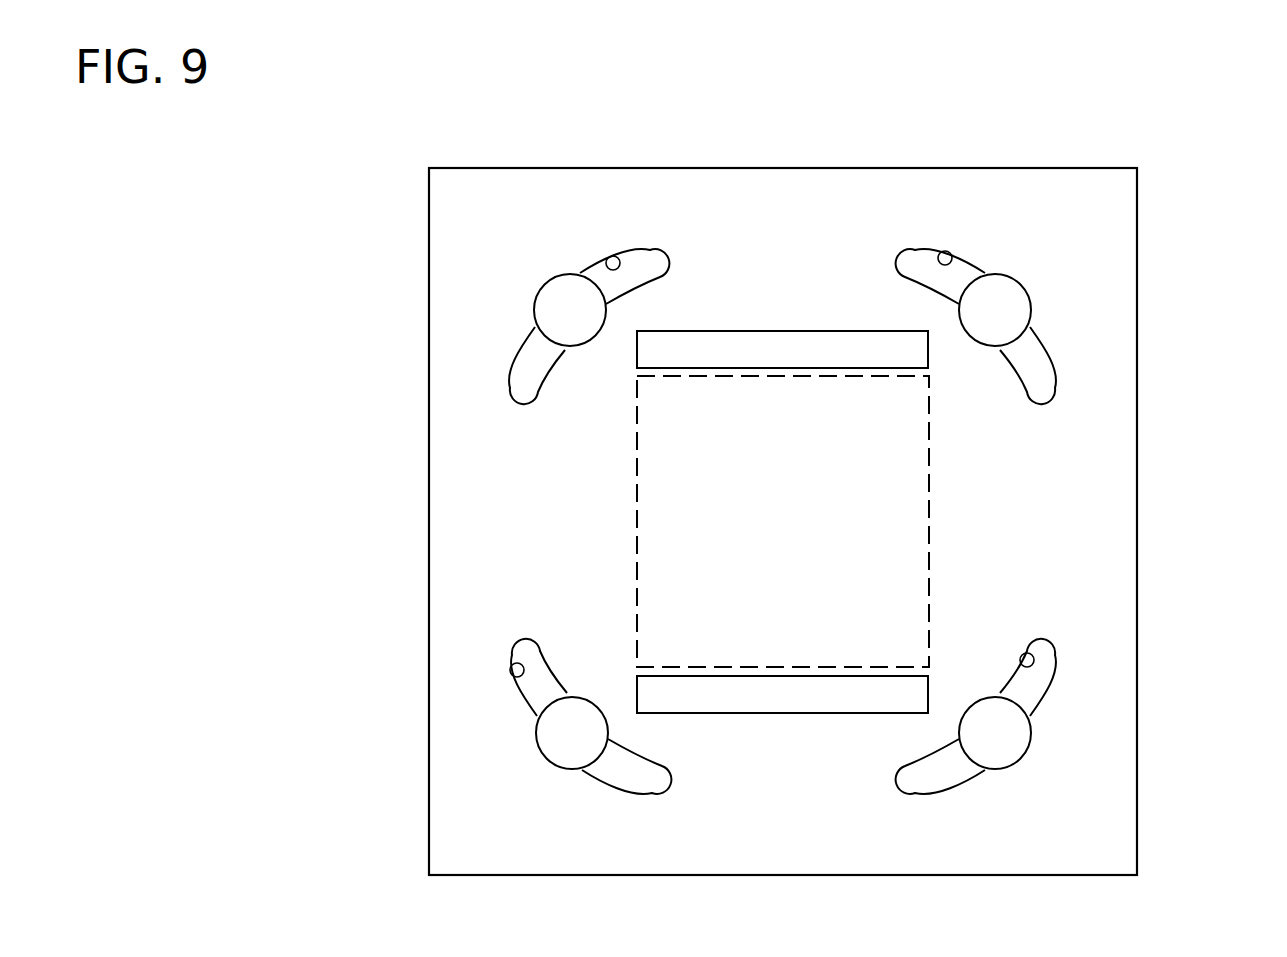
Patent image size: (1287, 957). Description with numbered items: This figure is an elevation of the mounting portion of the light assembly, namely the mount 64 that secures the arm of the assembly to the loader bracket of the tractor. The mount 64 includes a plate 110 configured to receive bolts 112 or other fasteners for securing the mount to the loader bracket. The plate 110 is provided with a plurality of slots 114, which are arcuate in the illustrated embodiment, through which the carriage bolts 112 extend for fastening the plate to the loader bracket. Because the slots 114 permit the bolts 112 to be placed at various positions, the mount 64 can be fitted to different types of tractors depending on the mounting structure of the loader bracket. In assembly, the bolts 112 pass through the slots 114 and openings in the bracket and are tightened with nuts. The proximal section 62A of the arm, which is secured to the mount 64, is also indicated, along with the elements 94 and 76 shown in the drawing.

The mount 64 is at (1142, 316).
The plate 110 is at (880, 168).
The payload compartment 94 is at (637, 590).
The proximal section 62A is at (932, 555).
The mounting rail 76 is at (772, 331).
The bolts 112 is at (548, 282).
The slots 114 is at (621, 257).